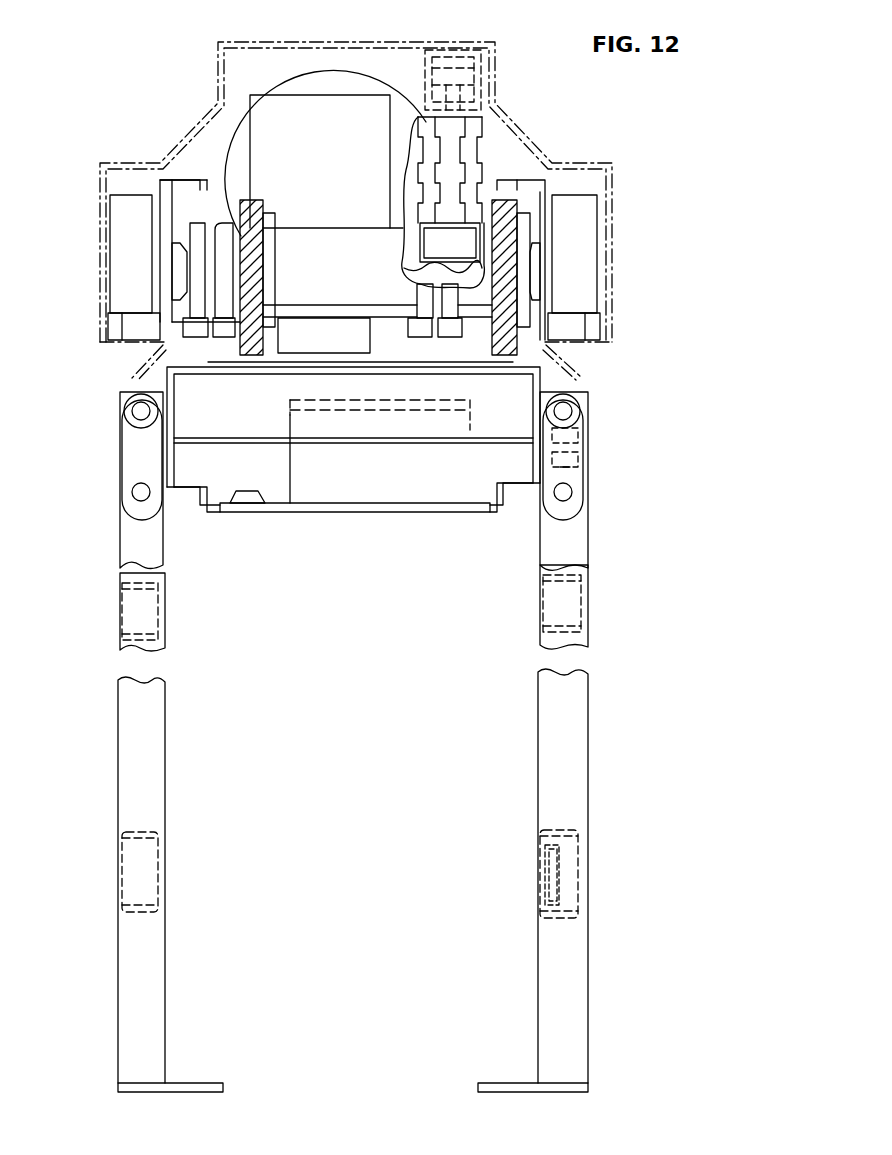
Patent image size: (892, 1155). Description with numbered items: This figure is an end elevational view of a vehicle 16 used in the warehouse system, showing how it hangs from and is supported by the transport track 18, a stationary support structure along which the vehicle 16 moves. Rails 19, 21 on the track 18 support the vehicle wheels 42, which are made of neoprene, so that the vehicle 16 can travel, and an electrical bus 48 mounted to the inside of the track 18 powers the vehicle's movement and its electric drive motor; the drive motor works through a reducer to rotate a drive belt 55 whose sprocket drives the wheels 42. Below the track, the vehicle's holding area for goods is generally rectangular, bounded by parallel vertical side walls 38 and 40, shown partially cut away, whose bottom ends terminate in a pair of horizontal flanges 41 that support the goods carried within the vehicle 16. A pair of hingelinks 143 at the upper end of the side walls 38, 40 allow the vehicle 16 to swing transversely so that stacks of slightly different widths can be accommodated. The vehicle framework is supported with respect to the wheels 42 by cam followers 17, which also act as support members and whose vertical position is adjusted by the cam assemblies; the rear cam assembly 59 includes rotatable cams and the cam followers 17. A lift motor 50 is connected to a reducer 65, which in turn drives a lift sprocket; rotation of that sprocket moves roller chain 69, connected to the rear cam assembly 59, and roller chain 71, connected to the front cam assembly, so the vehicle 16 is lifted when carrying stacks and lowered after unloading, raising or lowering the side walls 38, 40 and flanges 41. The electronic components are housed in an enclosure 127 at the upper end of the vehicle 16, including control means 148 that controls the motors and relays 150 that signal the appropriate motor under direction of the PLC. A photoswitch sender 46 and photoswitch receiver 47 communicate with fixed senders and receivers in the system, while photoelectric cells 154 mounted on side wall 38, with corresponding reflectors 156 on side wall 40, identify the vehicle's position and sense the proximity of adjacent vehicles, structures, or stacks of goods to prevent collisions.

The vehicle 16 is at (72, 692).
The cam followers 17 is at (250, 216).
The transport track 18 is at (340, 45).
The rail 19 is at (130, 347).
The rail 21 is at (583, 346).
The side wall 38 is at (126, 779).
The side wall 40 is at (582, 789).
The horizontal flanges 41 is at (190, 1093).
The vehicle wheels 42 is at (126, 272).
The photoswitch sender 46 is at (568, 438).
The photoswitch receiver 47 is at (562, 467).
The electrical bus 48 is at (470, 93).
The lift motor 50 is at (286, 90).
The drive belt 55 is at (224, 330).
The rear cam assembly 59 is at (333, 262).
The reducer 65 is at (256, 121).
The roller chain 69 is at (421, 330).
The roller chain 71 is at (450, 330).
The enclosure 127 is at (183, 495).
The hingelinks 143 is at (128, 461).
The control means 148 is at (373, 488).
The relays 150 is at (300, 403).
The photoelectric cells 154 is at (136, 871).
The reflectors 156 is at (548, 875).